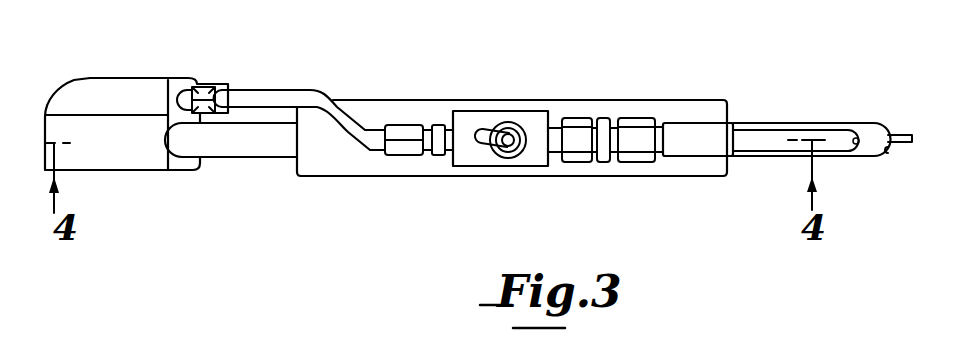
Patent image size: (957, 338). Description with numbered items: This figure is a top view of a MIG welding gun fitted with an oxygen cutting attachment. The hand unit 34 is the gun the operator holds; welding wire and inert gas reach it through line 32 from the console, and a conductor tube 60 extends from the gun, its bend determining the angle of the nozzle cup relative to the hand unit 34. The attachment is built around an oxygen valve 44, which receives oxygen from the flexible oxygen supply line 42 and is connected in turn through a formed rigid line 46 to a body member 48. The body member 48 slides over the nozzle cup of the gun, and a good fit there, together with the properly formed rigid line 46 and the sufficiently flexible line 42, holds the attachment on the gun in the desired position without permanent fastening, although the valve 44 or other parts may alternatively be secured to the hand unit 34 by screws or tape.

The line 32 is at (870, 150).
The hand unit 34 is at (382, 165).
The flexible oxygen supply line 42 is at (778, 127).
The oxygen valve 44 is at (541, 108).
The formed rigid line 46 is at (325, 101).
The body member 48 is at (150, 157).
The conductor tube 60 is at (250, 148).